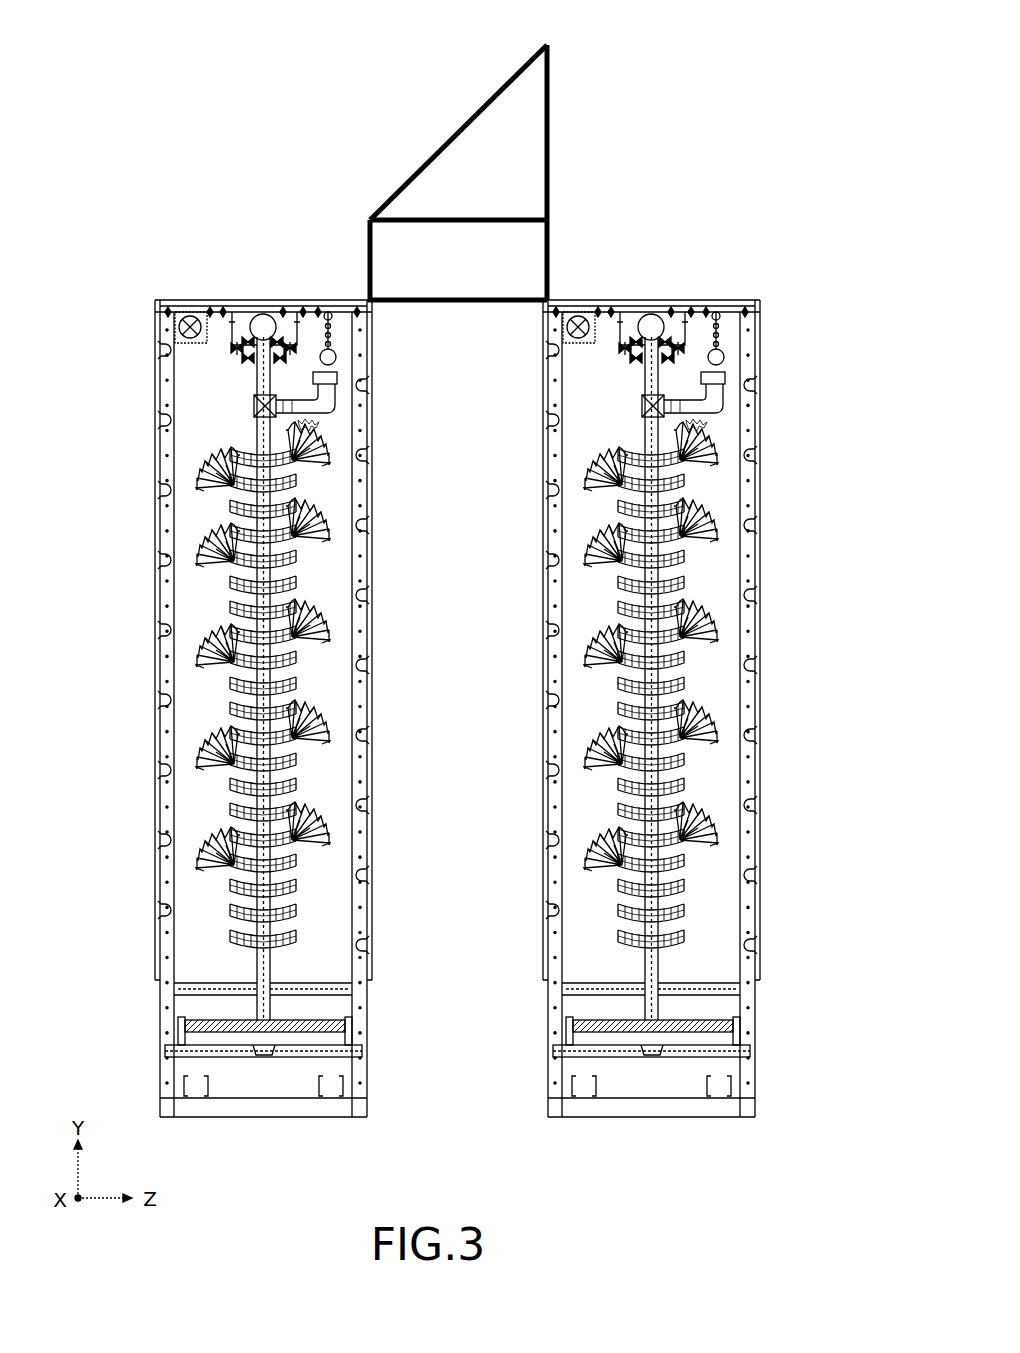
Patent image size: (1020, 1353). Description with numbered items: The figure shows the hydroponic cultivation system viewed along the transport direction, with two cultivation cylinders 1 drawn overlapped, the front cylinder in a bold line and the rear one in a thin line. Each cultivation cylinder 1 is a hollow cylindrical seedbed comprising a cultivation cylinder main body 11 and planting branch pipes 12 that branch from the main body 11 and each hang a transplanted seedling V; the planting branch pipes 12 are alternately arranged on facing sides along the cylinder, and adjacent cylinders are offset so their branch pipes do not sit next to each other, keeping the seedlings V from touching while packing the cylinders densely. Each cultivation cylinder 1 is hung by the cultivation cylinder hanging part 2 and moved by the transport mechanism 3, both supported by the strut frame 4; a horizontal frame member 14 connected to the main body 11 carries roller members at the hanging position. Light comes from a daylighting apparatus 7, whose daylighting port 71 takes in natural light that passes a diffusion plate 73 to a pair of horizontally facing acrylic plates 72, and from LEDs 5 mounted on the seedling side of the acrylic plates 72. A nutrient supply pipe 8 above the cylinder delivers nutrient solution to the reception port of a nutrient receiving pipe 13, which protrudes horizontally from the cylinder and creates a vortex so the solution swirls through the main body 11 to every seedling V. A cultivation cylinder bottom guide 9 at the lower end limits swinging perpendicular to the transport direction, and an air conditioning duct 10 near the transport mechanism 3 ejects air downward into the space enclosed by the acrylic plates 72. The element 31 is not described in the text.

The cultivation cylinder 1 is at (456, 678).
The cultivation cylinder hanging part 2 is at (399, 359).
The transport mechanism 3 is at (465, 300).
The strut frame 4 is at (158, 300).
The LED 5 is at (457, 647).
The daylighting apparatus 7 is at (485, 172).
The nutrient supply pipe 8 is at (555, 340).
The cultivation cylinder bottom guide 9 is at (482, 969).
The air conditioning duct 10 is at (190, 316).
The cultivation cylinder main body 11 is at (379, 678).
The planting branch pipe 12 is at (521, 698).
The nutrient receiving pipe 13 is at (525, 401).
The horizontal frame member 14 is at (578, 316).
The tank 31 is at (457, 296).
The daylighting port 71 is at (437, 156).
The acrylic plate 72 is at (456, 717).
The diffusion plate 73 is at (532, 298).
The seedling V is at (498, 646).